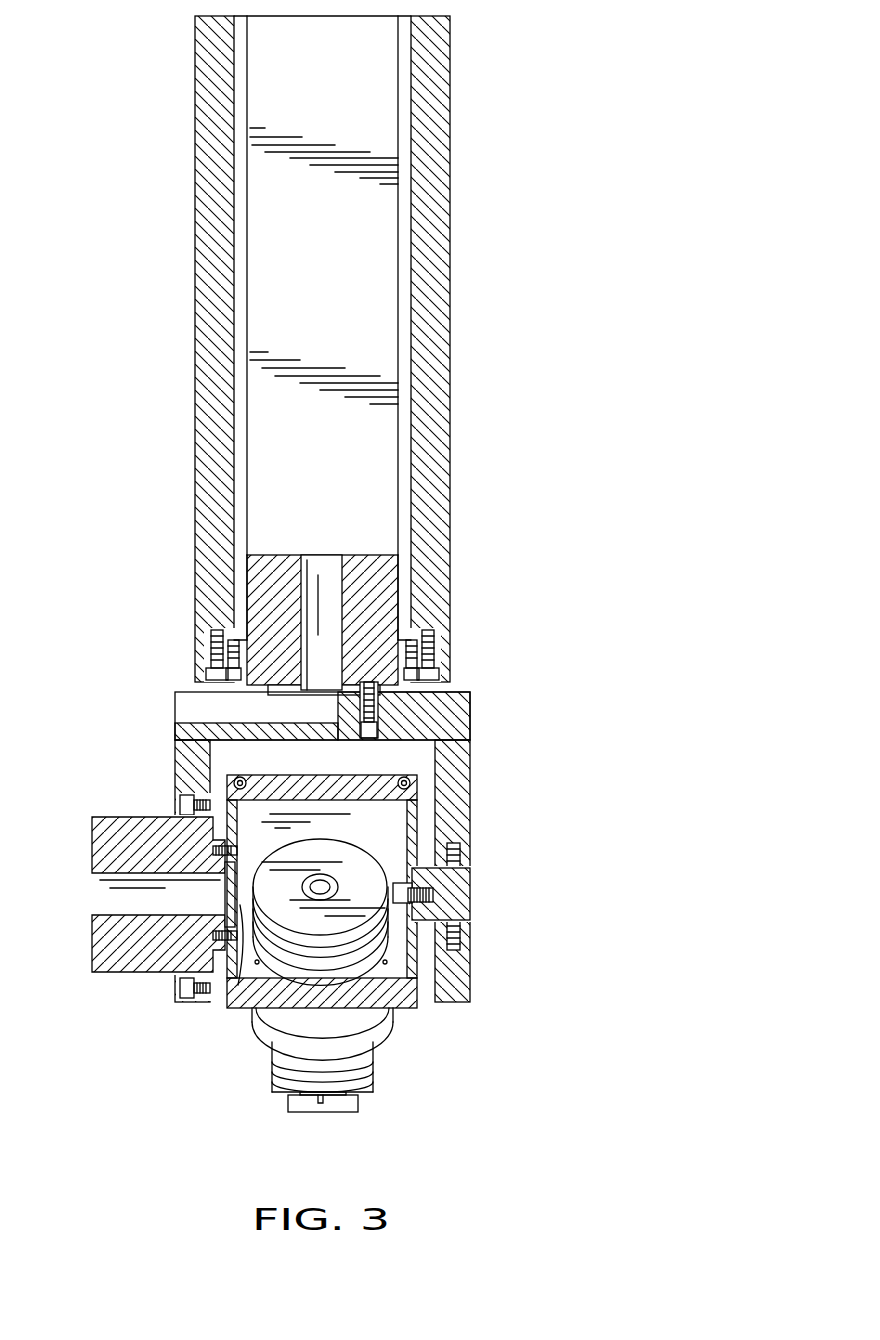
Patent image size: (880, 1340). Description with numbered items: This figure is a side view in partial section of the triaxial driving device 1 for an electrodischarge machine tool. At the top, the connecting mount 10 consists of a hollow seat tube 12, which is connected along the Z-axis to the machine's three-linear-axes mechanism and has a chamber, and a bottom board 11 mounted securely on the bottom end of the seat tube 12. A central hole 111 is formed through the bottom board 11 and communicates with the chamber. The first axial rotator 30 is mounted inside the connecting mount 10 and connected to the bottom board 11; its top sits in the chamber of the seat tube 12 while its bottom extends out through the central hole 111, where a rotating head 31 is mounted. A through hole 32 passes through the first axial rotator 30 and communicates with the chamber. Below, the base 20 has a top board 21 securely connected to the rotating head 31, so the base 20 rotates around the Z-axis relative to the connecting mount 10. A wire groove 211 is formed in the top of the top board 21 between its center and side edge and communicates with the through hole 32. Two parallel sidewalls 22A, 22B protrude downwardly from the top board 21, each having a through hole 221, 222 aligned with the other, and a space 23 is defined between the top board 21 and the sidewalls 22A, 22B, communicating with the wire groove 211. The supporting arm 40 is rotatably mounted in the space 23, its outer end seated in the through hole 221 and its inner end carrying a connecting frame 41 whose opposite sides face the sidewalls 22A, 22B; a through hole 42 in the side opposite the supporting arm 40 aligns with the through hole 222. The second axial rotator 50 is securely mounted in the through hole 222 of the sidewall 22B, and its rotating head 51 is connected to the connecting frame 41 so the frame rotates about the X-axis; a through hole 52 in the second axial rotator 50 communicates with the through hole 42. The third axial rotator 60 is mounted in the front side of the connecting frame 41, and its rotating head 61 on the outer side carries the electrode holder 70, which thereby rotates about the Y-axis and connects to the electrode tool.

The triaxial driving device 1 is at (487, 203).
The connecting mount 10 is at (455, 452).
The bottom board 11 is at (400, 636).
The central hole 111 is at (425, 633).
The seat tube 12 is at (430, 355).
The base 20 is at (478, 782).
The top board 21 is at (435, 717).
The wire groove 211 is at (226, 723).
The sidewall 22A is at (450, 993).
The sidewall 22B is at (190, 1000).
The through hole 221 is at (458, 936).
The through hole 222 is at (185, 818).
The space 23 is at (240, 742).
The first axial rotator 30 is at (330, 540).
The rotating head 31 is at (378, 700).
The through hole 32 is at (302, 572).
The supporting arm 40 is at (478, 882).
The connecting frame 41 is at (397, 943).
The through hole 42 is at (240, 905).
The second axial rotator 50 is at (120, 978).
The rotating head 51 is at (220, 853).
The through hole 52 is at (118, 915).
The third axial rotator 60 is at (385, 852).
The rotating head 61 is at (313, 1008).
The electrode holder 70 is at (352, 1115).